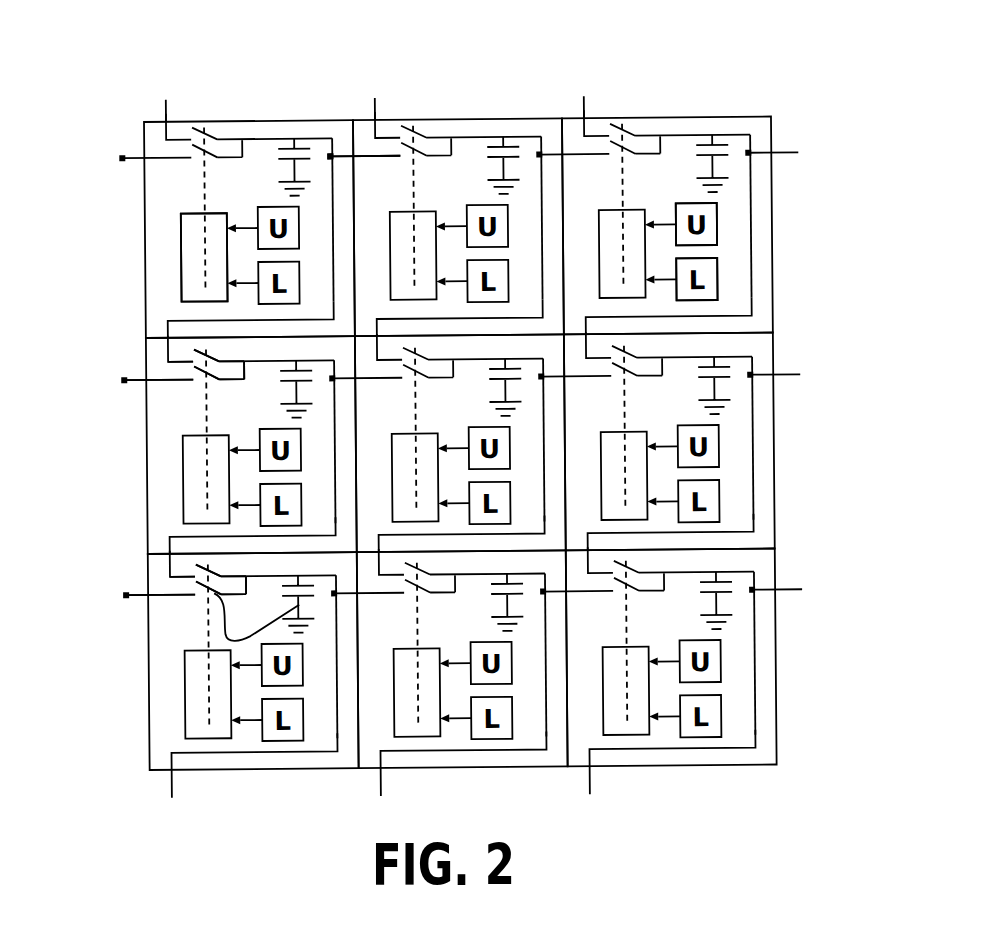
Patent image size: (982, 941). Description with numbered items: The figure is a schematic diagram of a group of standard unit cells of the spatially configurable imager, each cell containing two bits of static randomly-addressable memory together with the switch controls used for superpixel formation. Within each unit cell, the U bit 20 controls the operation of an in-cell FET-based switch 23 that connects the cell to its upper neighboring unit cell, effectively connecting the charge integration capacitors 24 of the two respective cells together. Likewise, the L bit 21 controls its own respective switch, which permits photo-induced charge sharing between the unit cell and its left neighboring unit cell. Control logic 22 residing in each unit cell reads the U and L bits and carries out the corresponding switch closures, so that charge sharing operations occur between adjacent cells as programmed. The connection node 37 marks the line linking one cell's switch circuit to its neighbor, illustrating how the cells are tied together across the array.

The U bit 20 is at (716, 220).
The L bit 21 is at (716, 277).
The control logic 22 is at (180, 257).
The switch 23 is at (205, 374).
The charge integration capacitor 24 is at (207, 590).
The connection node 37 is at (342, 157).